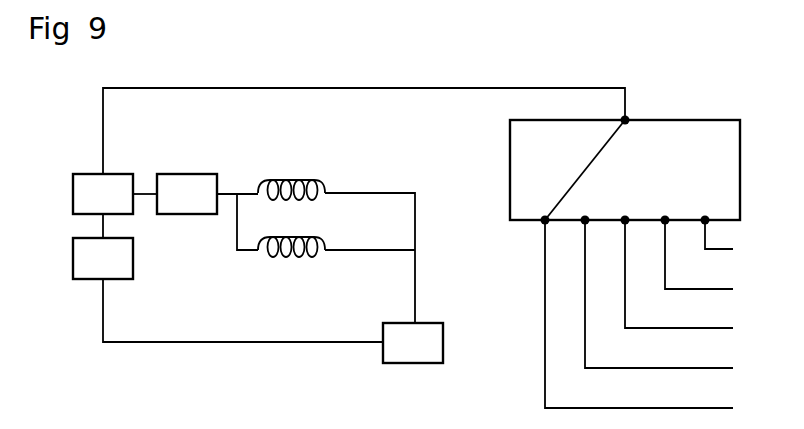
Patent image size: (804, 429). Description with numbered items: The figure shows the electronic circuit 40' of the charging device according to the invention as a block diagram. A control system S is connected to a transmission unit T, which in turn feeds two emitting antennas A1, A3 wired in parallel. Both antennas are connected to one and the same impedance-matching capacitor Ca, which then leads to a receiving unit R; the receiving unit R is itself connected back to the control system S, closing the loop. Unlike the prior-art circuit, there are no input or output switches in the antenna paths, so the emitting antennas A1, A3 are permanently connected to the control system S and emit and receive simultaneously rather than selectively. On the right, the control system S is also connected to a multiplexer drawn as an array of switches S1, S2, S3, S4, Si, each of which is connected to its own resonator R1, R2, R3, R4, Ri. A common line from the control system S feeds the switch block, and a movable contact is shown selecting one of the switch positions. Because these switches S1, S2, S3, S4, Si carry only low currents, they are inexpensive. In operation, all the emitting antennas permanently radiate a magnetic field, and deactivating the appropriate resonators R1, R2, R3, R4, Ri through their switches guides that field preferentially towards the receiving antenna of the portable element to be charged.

The electronic circuit 40' is at (633, 118).
The control system S is at (103, 194).
The transmission unit T is at (187, 194).
The receiving unit R is at (103, 258).
The impedance-matching capacitor Ca is at (413, 343).
The emitting antenna A1 is at (308, 183).
The emitting antenna A3 is at (308, 240).
The switch Si is at (537, 206).
The switch S4 is at (583, 206).
The switch S3 is at (623, 206).
The switch S2 is at (669, 206).
The switch S1 is at (716, 206).
The resonator R1 is at (735, 243).
The resonator R2 is at (715, 263).
The resonator R3 is at (695, 283).
The resonator R4 is at (675, 303).
The resonator Ri is at (652, 323).